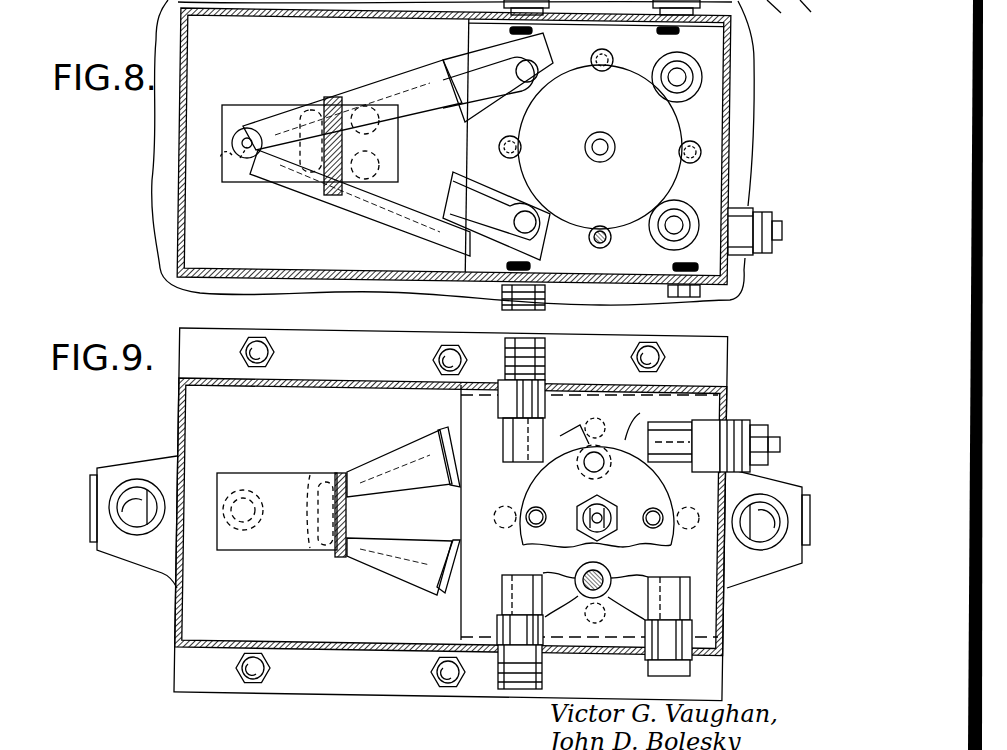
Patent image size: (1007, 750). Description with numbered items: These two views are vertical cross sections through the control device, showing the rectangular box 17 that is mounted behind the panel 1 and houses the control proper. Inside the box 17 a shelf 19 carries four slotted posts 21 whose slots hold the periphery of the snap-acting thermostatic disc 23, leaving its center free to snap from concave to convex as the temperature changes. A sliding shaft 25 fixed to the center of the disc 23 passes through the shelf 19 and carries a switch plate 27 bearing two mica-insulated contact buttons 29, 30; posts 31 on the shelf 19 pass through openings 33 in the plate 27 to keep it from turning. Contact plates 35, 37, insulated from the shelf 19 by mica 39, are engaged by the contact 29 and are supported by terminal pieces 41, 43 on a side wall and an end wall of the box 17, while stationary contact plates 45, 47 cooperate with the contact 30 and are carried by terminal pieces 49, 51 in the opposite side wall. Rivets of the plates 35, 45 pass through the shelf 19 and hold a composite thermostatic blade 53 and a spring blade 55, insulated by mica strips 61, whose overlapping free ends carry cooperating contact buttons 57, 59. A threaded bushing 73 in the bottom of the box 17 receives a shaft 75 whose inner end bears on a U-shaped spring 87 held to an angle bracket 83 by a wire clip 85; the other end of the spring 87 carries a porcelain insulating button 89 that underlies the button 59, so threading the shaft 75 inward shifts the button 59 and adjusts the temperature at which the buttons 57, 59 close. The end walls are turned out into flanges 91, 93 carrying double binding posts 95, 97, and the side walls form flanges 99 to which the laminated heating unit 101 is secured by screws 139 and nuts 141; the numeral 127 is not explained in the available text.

In FIG. 8, the panel 1 is at (160, 153).
In FIG. 8, the box 17 is at (178, 244).
In FIG. 9, the box 17 is at (178, 611).
In FIG. 8, the shelf 19 is at (467, 34).
In FIG. 9, the shelf 19 is at (462, 510).
In FIG. 8, the slotted posts 21 is at (603, 50).
In FIG. 9, the slotted posts 21 is at (590, 395).
In FIG. 8, the snap-acting thermostatic disc 23 is at (672, 112).
In FIG. 8, the sliding shaft 25 is at (597, 140).
In FIG. 9, the sliding shaft 25 is at (604, 507).
In FIG. 9, the switch plate 27 is at (648, 482).
In FIG. 9, the contact button 29 is at (603, 437).
In FIG. 9, the contact button 30 is at (604, 604).
In FIG. 9, the posts 31 is at (530, 508).
In FIG. 9, the openings 33 is at (508, 528).
In FIG. 9, the contact plate 35 is at (574, 422).
In FIG. 9, the contact plate 37 is at (645, 417).
In FIG. 9, the insulating material 39 is at (480, 423).
In FIG. 8, the terminal piece 41 is at (545, 296).
In FIG. 9, the terminal piece 41 is at (545, 365).
In FIG. 8, the terminal piece 43 is at (750, 257).
In FIG. 9, the terminal piece 43 is at (752, 422).
In FIG. 9, the stationary contact plate 45 is at (558, 573).
In FIG. 9, the stationary contact plate 47 is at (628, 569).
In FIG. 8, the terminal piece 49 is at (540, 23).
In FIG. 9, the terminal piece 49 is at (543, 668).
In FIG. 8, the terminal piece 51 is at (668, 23).
In FIG. 9, the terminal piece 51 is at (693, 657).
In FIG. 8, the composite thermostatic metal blade 53 is at (397, 190).
In FIG. 9, the composite thermostatic metal blade 53 is at (390, 461).
In FIG. 8, the spring blade 55 is at (413, 88).
In FIG. 9, the spring blade 55 is at (385, 553).
In FIG. 8, the contact button 57 is at (245, 128).
In FIG. 8, the contact button 59 is at (239, 160).
In FIG. 8, the mica strips 61 is at (466, 121).
In FIG. 9, the mica strips 61 is at (447, 432).
In FIG. 9, the threaded bushing 73 is at (256, 528).
In FIG. 9, the shaft 75 is at (243, 492).
In FIG. 8, the angle bracket 83 is at (344, 140).
In FIG. 9, the angle bracket 83 is at (347, 513).
In FIG. 8, the wire clip 85 is at (318, 122).
In FIG. 9, the wire clip 85 is at (336, 478).
In FIG. 8, the U-shaped spring 87 is at (277, 112).
In FIG. 9, the U-shaped spring 87 is at (268, 478).
In FIG. 8, the insulating button 89 is at (232, 154).
In FIG. 9, the flange 91 is at (118, 548).
In FIG. 9, the flange 93 is at (780, 488).
In FIG. 9, the double binding post element 95 is at (173, 445).
In FIG. 9, the double binding post element 97 is at (763, 544).
In FIG. 9, the flanges 99 is at (202, 341).
In FIG. 8, the composite laminated heating unit 101 is at (790, 15).
In FIG. 8, the screw 127 is at (826, 6).
In FIG. 8, the screws 139 is at (828, 20).
In FIG. 9, the screws 139 is at (274, 348).
In FIG. 9, the nuts 141 is at (242, 357).